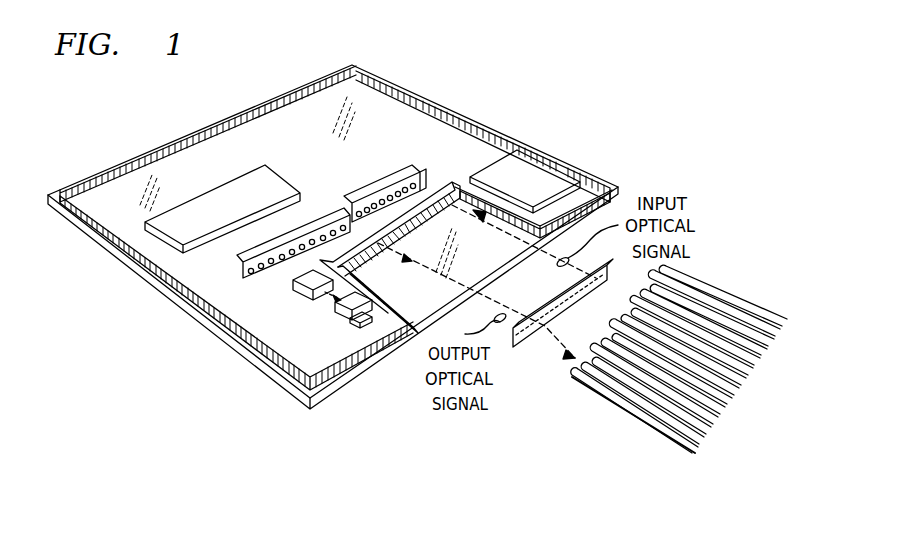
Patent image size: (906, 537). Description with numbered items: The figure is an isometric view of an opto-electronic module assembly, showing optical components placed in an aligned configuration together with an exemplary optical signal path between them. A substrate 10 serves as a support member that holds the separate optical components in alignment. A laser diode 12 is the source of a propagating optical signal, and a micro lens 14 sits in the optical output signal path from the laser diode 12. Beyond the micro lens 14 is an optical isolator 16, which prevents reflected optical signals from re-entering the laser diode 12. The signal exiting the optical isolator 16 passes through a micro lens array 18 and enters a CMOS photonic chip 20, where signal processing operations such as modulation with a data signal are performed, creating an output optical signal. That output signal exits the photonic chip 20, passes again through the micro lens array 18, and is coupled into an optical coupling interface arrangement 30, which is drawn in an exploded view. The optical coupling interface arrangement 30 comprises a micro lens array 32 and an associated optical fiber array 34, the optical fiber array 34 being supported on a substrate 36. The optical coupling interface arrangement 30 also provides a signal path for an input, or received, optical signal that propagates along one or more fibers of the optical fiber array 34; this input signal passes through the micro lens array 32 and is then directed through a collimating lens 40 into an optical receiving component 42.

The substrate 10 is at (330, 95).
The laser diode 12 is at (353, 328).
The micro lens 14 is at (343, 312).
The optical isolator 16 is at (297, 292).
The micro lens array 18 is at (243, 278).
The CMOS photonic chip 20 is at (197, 266).
The optical coupling interface arrangement 30 is at (797, 242).
The micro lens array 32 is at (517, 343).
The optical fiber array 34 is at (658, 384).
The substrate 36 is at (700, 445).
The collimating lens 40 is at (415, 170).
The optical receiving component 42 is at (408, 162).